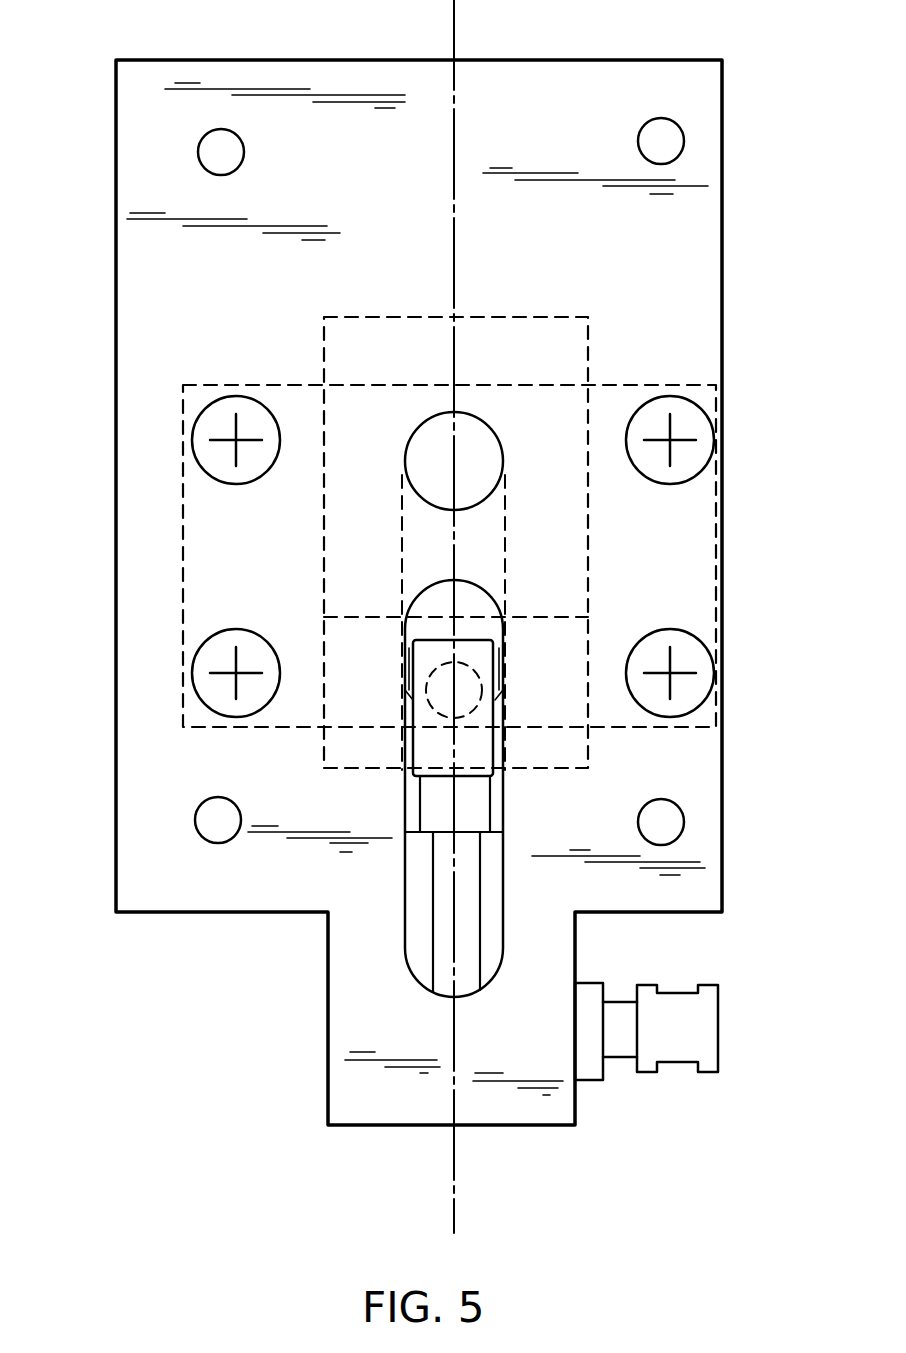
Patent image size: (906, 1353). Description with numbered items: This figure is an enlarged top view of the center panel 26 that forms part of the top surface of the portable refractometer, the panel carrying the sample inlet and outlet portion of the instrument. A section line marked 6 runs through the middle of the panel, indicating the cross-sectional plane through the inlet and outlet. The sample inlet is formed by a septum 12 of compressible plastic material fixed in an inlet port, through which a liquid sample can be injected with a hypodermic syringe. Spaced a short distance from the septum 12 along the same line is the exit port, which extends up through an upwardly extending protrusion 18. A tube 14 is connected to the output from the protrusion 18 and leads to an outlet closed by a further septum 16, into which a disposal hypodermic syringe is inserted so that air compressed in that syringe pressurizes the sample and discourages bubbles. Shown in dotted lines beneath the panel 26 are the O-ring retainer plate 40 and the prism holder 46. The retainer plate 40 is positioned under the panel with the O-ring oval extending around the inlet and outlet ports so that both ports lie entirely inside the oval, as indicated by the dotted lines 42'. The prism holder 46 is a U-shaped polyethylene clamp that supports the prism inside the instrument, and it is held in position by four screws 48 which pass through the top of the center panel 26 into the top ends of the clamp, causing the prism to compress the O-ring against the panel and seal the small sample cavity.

The section line 6- 6 is at (470, 10).
The septum 12 is at (492, 430).
The tube 14 is at (447, 985).
The septum 16 is at (720, 1030).
The protrusion 18 is at (500, 708).
The central panel 26 is at (722, 237).
The O-ring retainer plate 40 is at (436, 316).
The dotted lines 42' is at (478, 622).
The prism holder 46 is at (236, 385).
The screws 48 is at (222, 480).